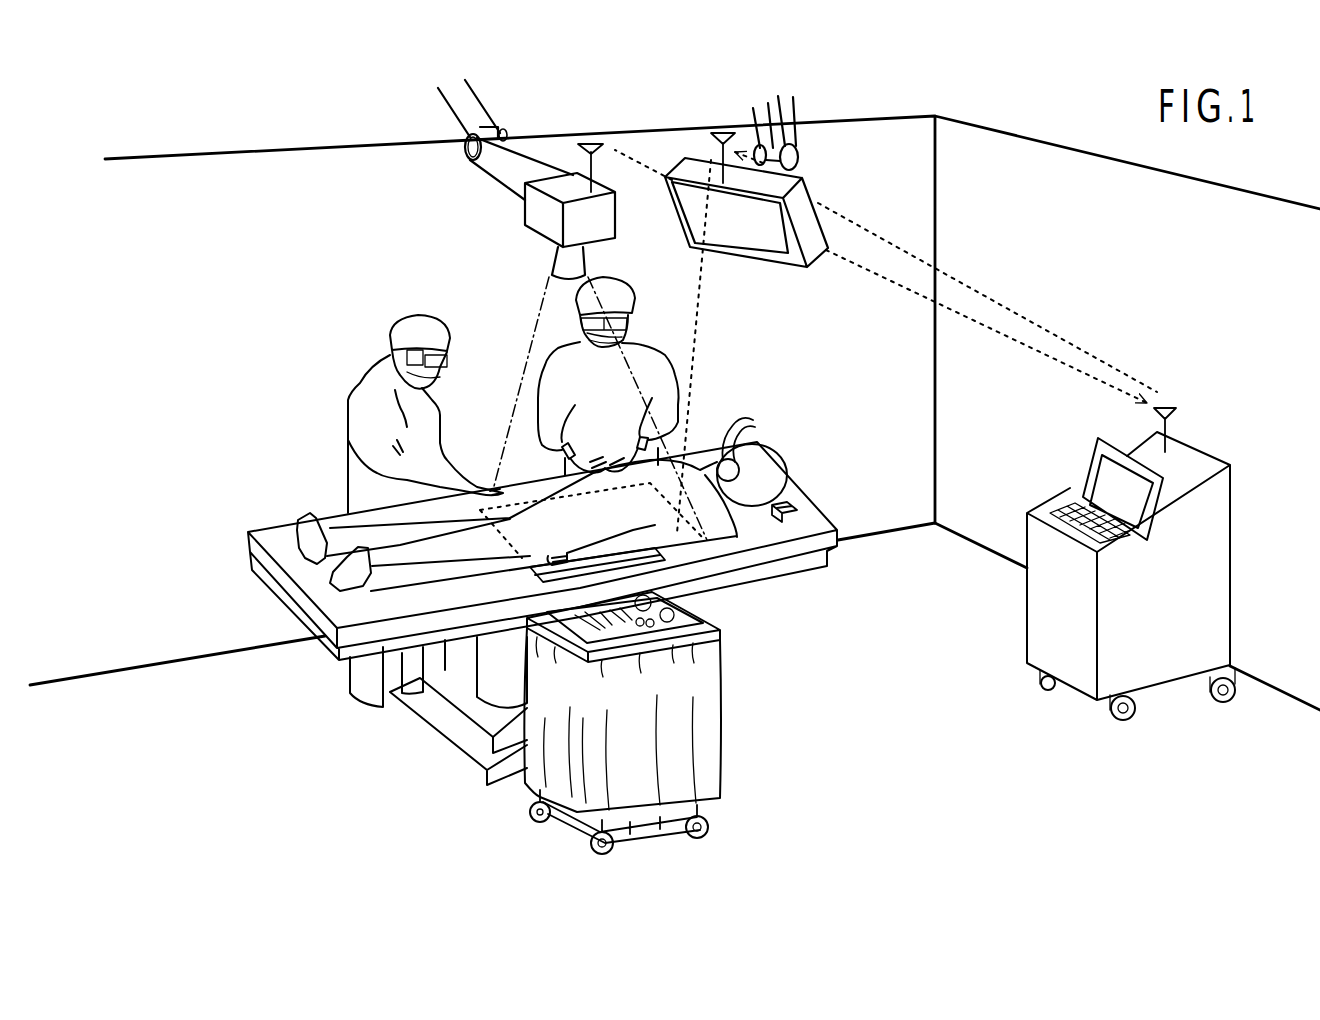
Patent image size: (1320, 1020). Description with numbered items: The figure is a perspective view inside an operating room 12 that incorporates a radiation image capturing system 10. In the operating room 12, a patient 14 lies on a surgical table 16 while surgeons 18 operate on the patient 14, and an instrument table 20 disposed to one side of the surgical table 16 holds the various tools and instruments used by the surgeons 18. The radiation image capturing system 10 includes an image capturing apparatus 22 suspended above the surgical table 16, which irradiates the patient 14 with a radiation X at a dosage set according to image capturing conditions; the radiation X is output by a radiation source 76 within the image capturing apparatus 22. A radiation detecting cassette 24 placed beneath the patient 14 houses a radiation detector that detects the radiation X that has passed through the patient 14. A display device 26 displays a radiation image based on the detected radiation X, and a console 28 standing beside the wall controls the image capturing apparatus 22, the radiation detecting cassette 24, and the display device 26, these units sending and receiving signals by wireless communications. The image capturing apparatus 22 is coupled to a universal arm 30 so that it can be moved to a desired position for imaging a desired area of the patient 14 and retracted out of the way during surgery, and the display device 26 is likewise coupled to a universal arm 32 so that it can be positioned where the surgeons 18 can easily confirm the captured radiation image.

The radiation image capturing system 10 is at (860, 387).
The operating room 12 is at (918, 188).
The patient 14 is at (340, 540).
The surgical table 16 is at (275, 533).
The surgeons 18 is at (364, 434).
The instrument table 20 is at (670, 681).
The image capturing apparatus 22 is at (521, 211).
The radiation detecting cassette 24 is at (527, 573).
The display device 26 is at (818, 197).
The console 28 is at (1040, 625).
The universal arm 30 is at (470, 106).
The universal arm 32 is at (778, 113).
The radiation source 76 is at (577, 258).
The radiation X is at (536, 320).